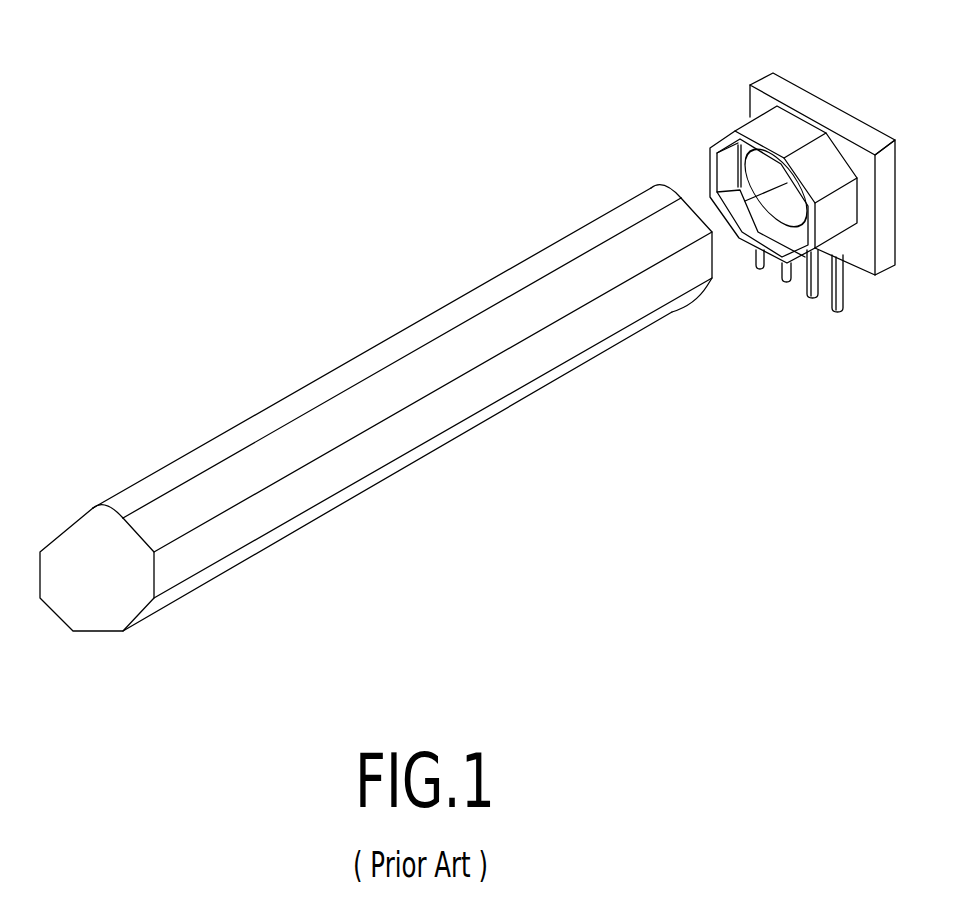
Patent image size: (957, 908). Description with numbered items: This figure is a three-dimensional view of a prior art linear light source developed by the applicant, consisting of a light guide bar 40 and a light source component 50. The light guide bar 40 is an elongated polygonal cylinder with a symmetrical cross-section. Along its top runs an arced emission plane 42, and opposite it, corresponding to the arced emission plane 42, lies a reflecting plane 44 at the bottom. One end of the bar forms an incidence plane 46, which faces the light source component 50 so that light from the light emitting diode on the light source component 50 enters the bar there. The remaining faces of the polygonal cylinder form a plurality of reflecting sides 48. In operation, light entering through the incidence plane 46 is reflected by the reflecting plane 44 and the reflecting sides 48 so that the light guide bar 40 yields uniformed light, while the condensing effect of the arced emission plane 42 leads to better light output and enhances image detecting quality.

The light guide bar 40 is at (373, 369).
The arced emission plane 42 is at (134, 484).
The reflecting plane 44 is at (97, 632).
The incidence plane 46 is at (692, 206).
The reflecting sides 48 is at (307, 450).
The light source component 50 is at (735, 120).